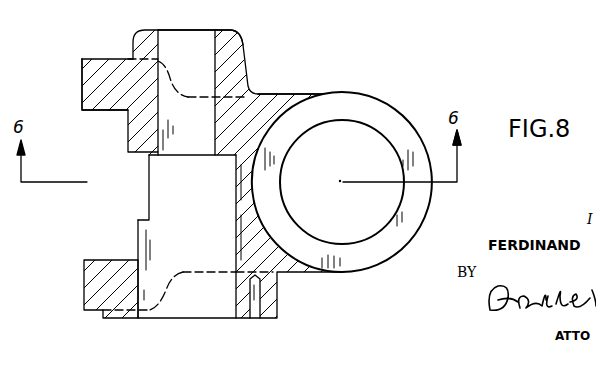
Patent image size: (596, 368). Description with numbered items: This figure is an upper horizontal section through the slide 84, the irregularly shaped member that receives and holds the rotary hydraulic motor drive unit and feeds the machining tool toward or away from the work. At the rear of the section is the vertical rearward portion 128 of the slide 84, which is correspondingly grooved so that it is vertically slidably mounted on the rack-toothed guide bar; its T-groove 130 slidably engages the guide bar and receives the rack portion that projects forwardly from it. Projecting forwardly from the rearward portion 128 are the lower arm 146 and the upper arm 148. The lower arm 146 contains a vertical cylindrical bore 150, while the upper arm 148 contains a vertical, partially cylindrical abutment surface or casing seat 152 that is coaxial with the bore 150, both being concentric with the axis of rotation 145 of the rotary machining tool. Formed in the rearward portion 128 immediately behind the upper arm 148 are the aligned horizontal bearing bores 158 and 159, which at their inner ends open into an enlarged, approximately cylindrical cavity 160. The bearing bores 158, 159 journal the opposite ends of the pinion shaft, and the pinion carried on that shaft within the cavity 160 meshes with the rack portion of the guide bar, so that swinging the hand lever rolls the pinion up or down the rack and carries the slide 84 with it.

The slide 84 is at (240, 30).
The vertical rearward portion 128 is at (234, 73).
The T-groove 130 is at (103, 110).
The axis of rotation 145 is at (339, 181).
The lower arm 146 is at (385, 117).
The upper arm 148 is at (284, 94).
The vertical cylindrical bore 150 is at (369, 127).
The casing seat 152 is at (290, 104).
The horizontal bearing bore 158 is at (162, 38).
The horizontal bearing bore 159 is at (138, 319).
The cylindrical cavity 160 is at (234, 172).